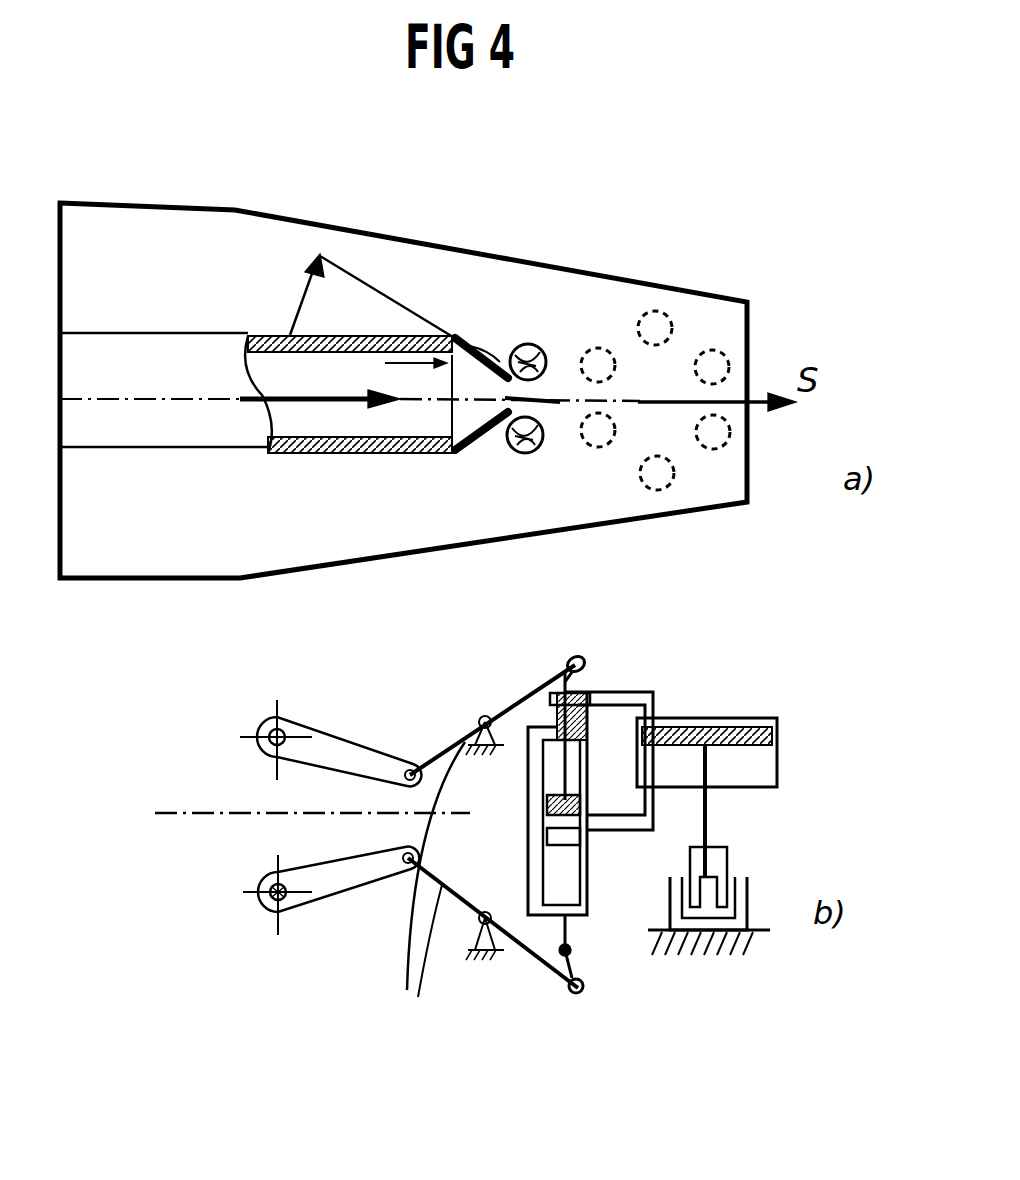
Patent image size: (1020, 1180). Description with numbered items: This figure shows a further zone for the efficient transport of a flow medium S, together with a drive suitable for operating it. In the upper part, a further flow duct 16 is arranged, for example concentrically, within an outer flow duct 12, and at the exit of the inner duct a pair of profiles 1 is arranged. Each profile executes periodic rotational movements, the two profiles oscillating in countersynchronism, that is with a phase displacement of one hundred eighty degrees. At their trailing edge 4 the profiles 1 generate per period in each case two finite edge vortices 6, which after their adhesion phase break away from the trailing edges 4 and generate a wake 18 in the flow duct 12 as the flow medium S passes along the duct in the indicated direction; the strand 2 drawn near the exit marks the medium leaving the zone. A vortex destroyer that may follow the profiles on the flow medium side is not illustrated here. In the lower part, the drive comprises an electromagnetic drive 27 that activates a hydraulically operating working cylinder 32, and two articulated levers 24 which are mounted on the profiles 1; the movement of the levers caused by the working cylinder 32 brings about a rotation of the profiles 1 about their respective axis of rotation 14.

The profile 1 is at (353, 738).
The fiber strand 2 is at (735, 395).
The trailing edge 4 is at (541, 418).
The edge vortex 6 is at (541, 352).
The flow duct 12 is at (430, 240).
The axis of rotation 14 is at (255, 908).
The further flow duct 16 is at (268, 455).
The wake 18 is at (662, 315).
The articulated lever 24 is at (429, 900).
The electromagnetic drive 27 is at (750, 890).
The working cylinder 32 is at (590, 867).